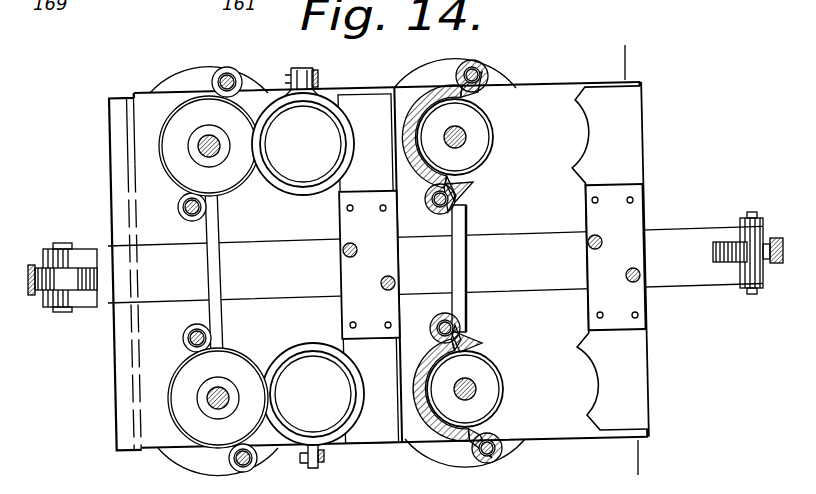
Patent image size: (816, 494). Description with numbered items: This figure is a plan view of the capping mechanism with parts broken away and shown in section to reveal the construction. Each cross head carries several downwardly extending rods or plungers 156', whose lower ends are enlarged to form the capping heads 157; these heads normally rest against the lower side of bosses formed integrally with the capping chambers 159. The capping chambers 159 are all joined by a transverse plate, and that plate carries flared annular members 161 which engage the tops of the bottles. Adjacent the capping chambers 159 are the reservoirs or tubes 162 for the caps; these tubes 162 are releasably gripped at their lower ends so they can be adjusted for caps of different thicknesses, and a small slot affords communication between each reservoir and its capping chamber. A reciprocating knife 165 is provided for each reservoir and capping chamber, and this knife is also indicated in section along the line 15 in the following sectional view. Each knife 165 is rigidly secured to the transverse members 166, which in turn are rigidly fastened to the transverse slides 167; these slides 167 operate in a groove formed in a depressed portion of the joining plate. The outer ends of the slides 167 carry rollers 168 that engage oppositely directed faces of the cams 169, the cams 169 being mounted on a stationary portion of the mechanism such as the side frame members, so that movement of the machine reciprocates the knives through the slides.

The section line 15 is at (635, 255).
The rods or plungers 156' is at (355, 285).
The capping heads 157 is at (470, 162).
The capping chambers 159 is at (172, 153).
The flared annular members 161 is at (178, 68).
The reservoirs or tubes 162 is at (297, 172).
The reciprocating knife 165 is at (627, 142).
The transverse members 166 is at (634, 210).
The transverse slides 167 is at (688, 258).
The rollers 168 is at (69, 271).
The cams 169 is at (37, 306).